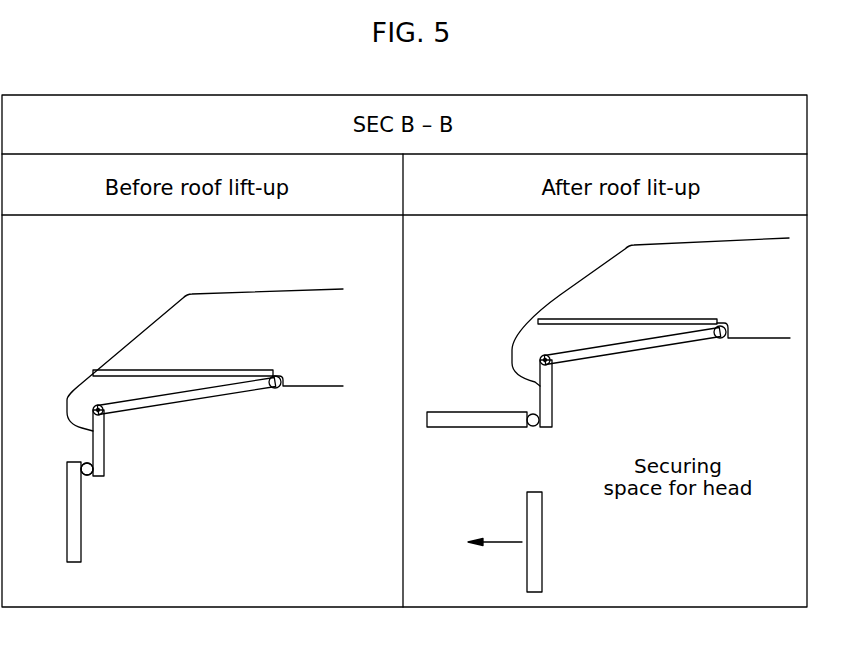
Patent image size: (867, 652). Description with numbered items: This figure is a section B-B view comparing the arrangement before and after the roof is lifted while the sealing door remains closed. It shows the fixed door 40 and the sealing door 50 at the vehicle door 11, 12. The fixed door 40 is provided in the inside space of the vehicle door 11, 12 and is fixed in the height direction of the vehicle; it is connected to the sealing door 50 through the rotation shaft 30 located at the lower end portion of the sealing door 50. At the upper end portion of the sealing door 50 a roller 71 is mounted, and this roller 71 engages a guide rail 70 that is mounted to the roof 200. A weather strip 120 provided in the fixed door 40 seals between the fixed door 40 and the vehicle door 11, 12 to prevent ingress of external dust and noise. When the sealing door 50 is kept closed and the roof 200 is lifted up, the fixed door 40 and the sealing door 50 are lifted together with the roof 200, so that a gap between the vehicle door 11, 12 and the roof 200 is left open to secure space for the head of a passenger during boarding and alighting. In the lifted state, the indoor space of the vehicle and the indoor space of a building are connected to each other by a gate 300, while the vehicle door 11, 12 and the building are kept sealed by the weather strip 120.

The roof 200 is at (251, 292).
The guide rail 70 is at (240, 369).
The roller 71 is at (278, 374).
The sealing door 50 is at (192, 396).
The rotation shaft 30 is at (95, 405).
The fixed door 40 is at (99, 465).
The weather strip 120 is at (87, 476).
The vehicle door 11 is at (132, 512).
The vehicle door 12 is at (75, 545).
The gate 300 is at (472, 422).